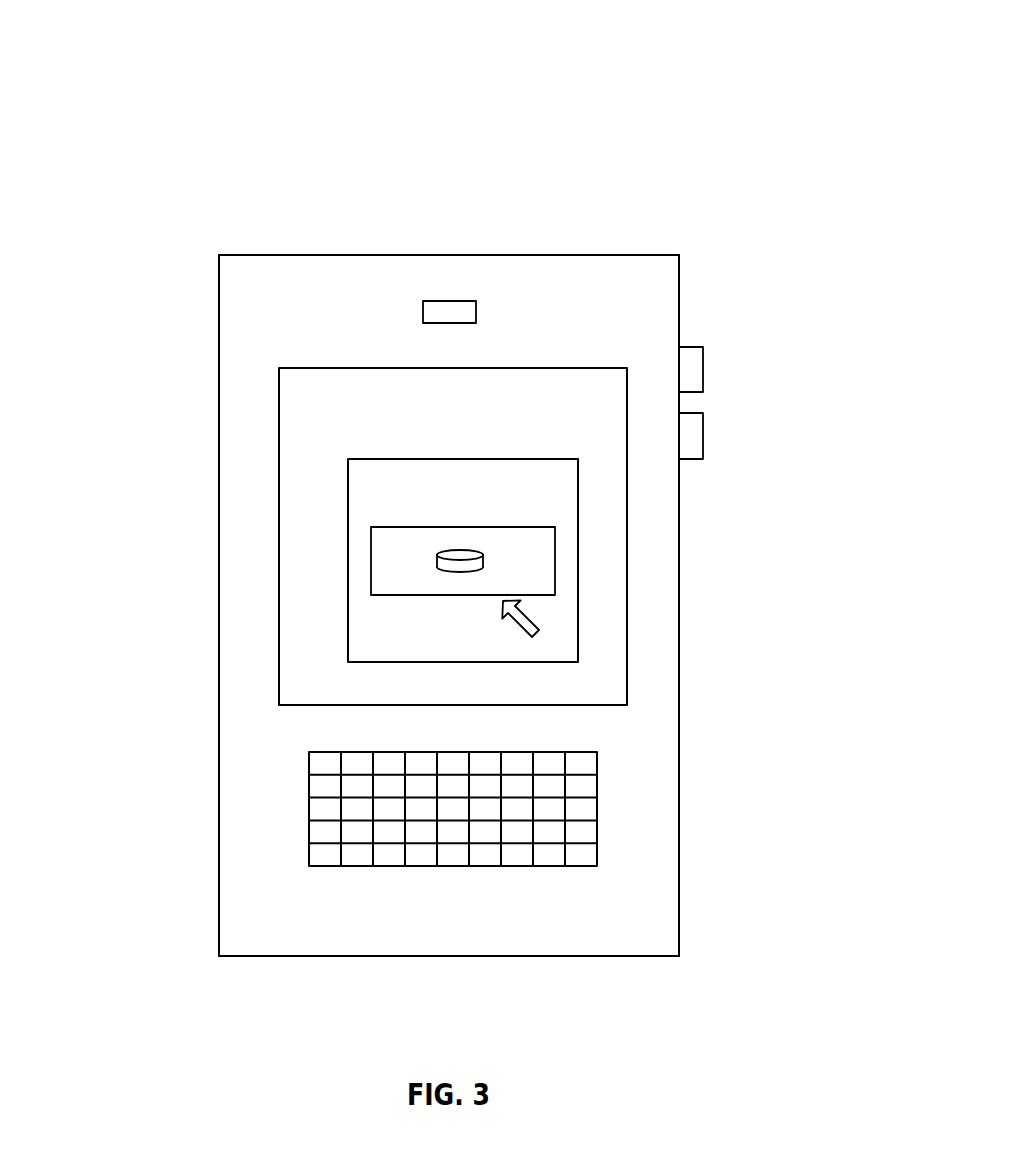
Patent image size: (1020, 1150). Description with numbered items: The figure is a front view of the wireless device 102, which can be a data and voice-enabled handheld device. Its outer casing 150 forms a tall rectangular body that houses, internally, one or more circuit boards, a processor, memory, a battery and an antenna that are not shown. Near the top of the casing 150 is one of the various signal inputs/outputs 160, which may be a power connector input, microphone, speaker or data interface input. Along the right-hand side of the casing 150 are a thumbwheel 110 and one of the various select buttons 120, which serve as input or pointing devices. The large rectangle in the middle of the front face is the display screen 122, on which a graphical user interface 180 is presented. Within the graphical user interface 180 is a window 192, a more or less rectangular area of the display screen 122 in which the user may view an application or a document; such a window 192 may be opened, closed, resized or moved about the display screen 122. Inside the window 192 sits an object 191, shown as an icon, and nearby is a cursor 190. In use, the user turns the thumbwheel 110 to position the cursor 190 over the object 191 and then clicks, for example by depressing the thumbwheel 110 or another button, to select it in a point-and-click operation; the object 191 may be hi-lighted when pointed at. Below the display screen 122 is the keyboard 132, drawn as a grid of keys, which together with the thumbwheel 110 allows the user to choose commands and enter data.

The wireless device 102 is at (438, 232).
The casing 150 is at (280, 277).
The signal inputs/outputs 160 is at (446, 300).
The thumbwheel 110 is at (696, 369).
The select buttons 120 is at (695, 437).
The display screen 122 is at (318, 414).
The graphical user interface 180 is at (352, 528).
The window 192 is at (537, 549).
The object 191 is at (437, 570).
The cursor 190 is at (550, 617).
The keyboard 132 is at (573, 800).